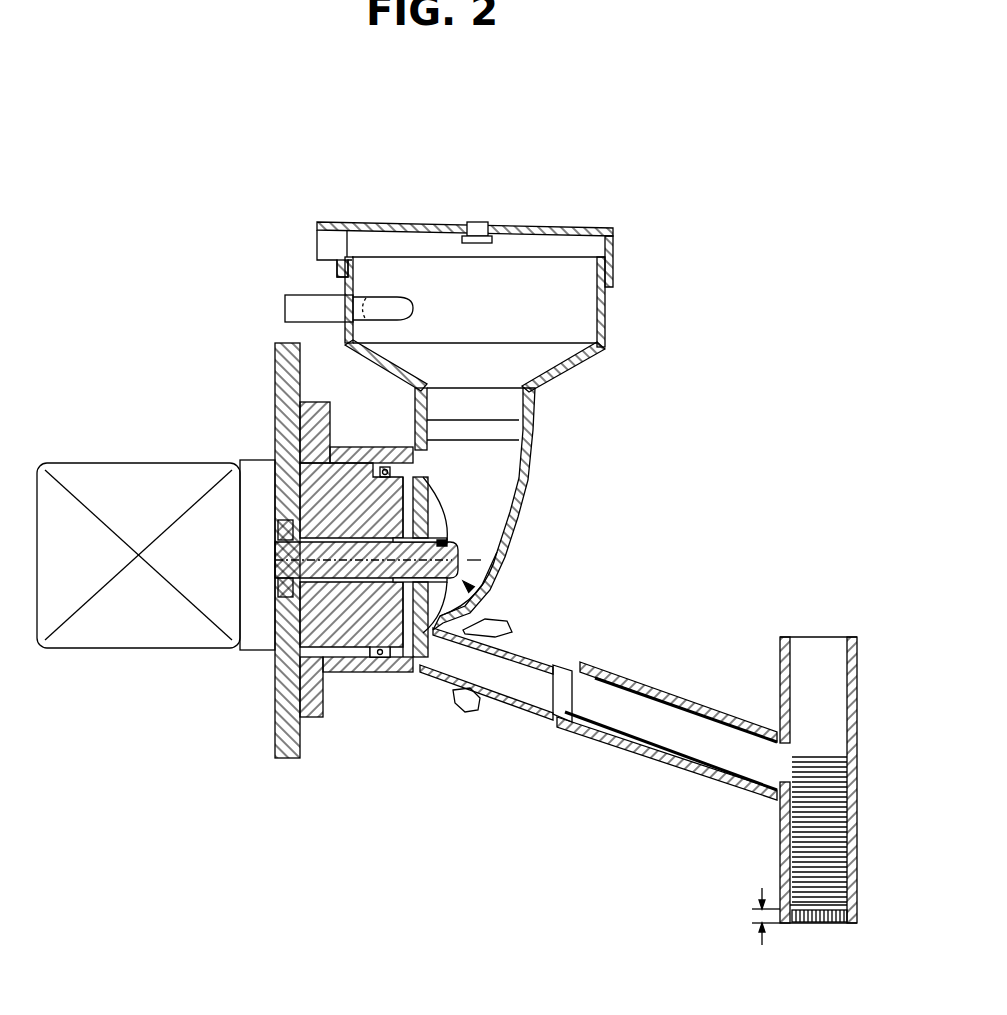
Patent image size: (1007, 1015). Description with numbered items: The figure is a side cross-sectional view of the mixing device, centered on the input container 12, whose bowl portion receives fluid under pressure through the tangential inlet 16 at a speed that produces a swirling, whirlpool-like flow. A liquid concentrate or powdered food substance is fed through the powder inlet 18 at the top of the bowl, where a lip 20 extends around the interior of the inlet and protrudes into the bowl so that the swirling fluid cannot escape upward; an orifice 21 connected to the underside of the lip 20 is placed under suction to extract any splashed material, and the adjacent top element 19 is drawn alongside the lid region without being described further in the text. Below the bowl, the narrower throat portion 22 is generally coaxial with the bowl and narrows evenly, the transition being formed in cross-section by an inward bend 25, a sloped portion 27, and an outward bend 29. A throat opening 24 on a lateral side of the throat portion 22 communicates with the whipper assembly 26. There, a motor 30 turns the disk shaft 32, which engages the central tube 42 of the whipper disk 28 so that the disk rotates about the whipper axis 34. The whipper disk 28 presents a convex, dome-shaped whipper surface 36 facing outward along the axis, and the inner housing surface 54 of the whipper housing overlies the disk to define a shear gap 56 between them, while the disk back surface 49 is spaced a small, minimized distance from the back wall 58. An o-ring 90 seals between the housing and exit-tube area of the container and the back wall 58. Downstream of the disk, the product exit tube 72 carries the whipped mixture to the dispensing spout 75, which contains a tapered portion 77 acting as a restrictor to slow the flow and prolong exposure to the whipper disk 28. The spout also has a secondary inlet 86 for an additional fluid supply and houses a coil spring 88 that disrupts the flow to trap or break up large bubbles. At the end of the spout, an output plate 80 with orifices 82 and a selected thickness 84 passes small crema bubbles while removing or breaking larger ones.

The input container 12 is at (583, 455).
The tangential inlet 16 is at (312, 300).
The powder inlet 18 is at (485, 217).
The lid plate 19 is at (492, 238).
The lip 20 is at (405, 205).
The orifice 21 is at (322, 245).
The throat portion 22 is at (500, 467).
The throat opening 24 is at (448, 545).
The inward bend 25 is at (605, 348).
The whipper assembly 26 is at (484, 610).
The sloped portion 27 is at (567, 371).
The whipper disk 28 is at (403, 652).
The outward bend 29 is at (533, 389).
The motor 30 is at (137, 635).
The disk shaft 32 is at (320, 543).
The whipper axis 34 is at (478, 592).
The whipper surface 36 is at (428, 622).
The central tube 42 is at (474, 558).
The disk back surface 49 is at (405, 660).
The inner housing surface 54 is at (428, 477).
The shear gap 56 is at (423, 480).
The back wall 58 is at (417, 463).
The product exit tube 72 is at (510, 678).
The dispensing spout 75 is at (549, 740).
The tapered portion 77 is at (670, 767).
The output plate 80 is at (787, 923).
The orifices 82 is at (837, 923).
The thickness 84 is at (762, 898).
The secondary inlet 86 is at (813, 658).
The coil spring 88 is at (842, 800).
The o-ring 90 is at (374, 658).